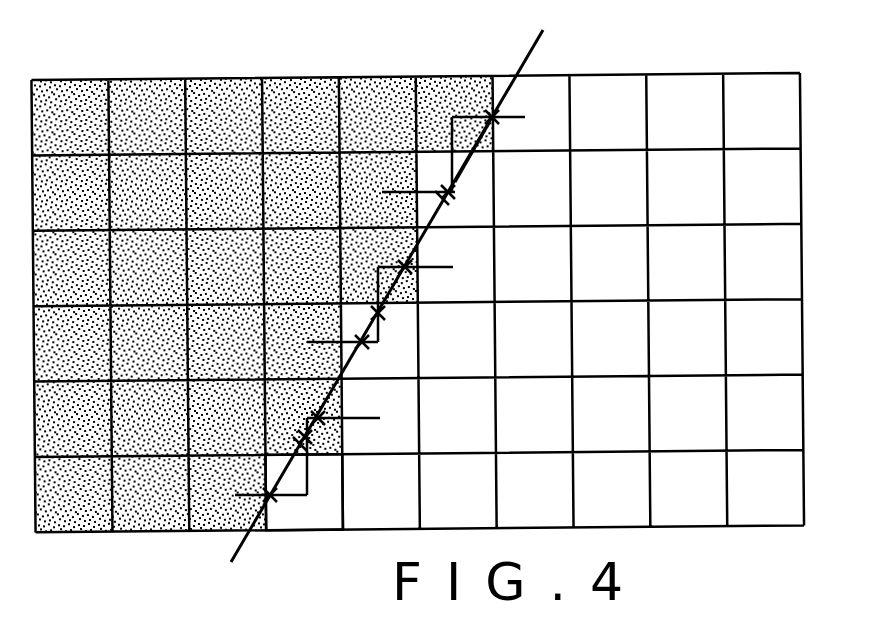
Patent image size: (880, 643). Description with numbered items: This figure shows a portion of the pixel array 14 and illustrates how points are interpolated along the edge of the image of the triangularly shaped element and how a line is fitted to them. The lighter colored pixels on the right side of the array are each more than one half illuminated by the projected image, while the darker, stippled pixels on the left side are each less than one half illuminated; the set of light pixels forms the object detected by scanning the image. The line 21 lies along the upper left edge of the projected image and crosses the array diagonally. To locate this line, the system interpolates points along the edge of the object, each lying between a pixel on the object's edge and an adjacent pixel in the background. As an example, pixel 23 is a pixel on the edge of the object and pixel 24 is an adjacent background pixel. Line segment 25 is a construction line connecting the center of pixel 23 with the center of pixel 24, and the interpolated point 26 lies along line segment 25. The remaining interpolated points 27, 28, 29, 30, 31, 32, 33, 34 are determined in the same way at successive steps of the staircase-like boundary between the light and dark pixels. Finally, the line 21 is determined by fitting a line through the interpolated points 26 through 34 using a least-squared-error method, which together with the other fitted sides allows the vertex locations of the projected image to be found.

The pixel array 14 is at (613, 73).
The line 21 is at (534, 45).
The pixel 23 is at (332, 520).
The pixel 24 is at (237, 520).
The line segment 25 is at (296, 490).
The interpolated point 26 is at (276, 502).
The interpolated point 27 is at (308, 448).
The interpolated point 28 is at (320, 420).
The interpolated point 29 is at (362, 344).
The interpolated point 30 is at (380, 316).
The interpolated point 31 is at (407, 273).
The interpolated point 32 is at (448, 198).
The interpolated point 33 is at (467, 165).
The interpolated point 34 is at (496, 122).